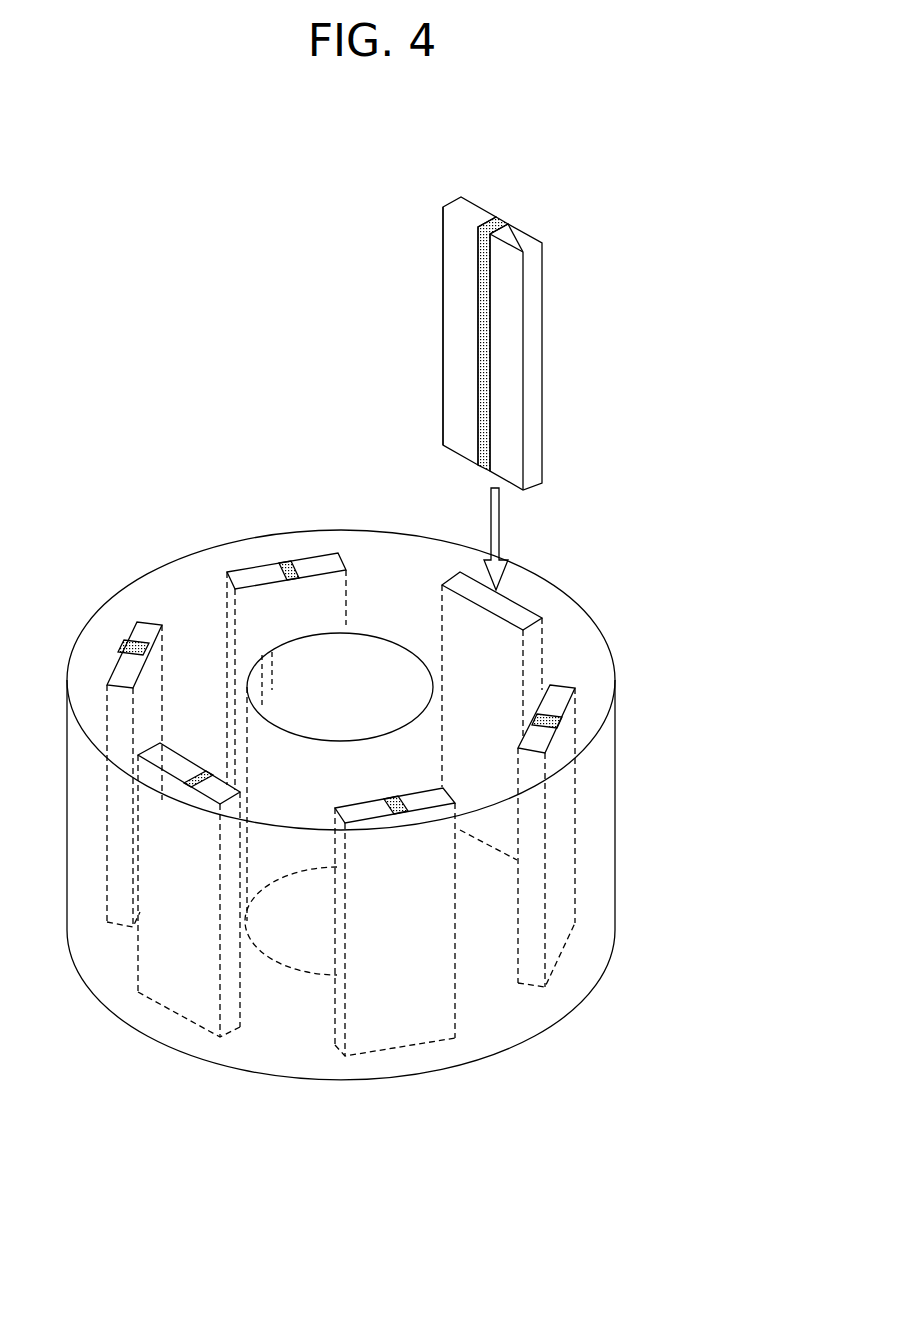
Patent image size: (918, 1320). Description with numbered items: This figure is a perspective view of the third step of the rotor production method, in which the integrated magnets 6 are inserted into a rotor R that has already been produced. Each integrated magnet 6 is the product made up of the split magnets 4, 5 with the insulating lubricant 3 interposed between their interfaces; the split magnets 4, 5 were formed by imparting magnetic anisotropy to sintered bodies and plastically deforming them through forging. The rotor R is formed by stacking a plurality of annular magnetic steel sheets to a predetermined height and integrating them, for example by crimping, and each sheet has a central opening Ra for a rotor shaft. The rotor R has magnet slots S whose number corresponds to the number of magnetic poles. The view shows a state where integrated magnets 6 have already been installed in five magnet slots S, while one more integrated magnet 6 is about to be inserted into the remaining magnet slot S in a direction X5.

The rotor R is at (597, 810).
The opening Ra is at (380, 668).
The magnet slot S is at (523, 612).
The direction X5 is at (512, 539).
The integrated magnet 6 is at (344, 625).
The split magnet 4 is at (473, 212).
The insulating lubricant 3 is at (492, 221).
The split magnet 5 is at (523, 331).